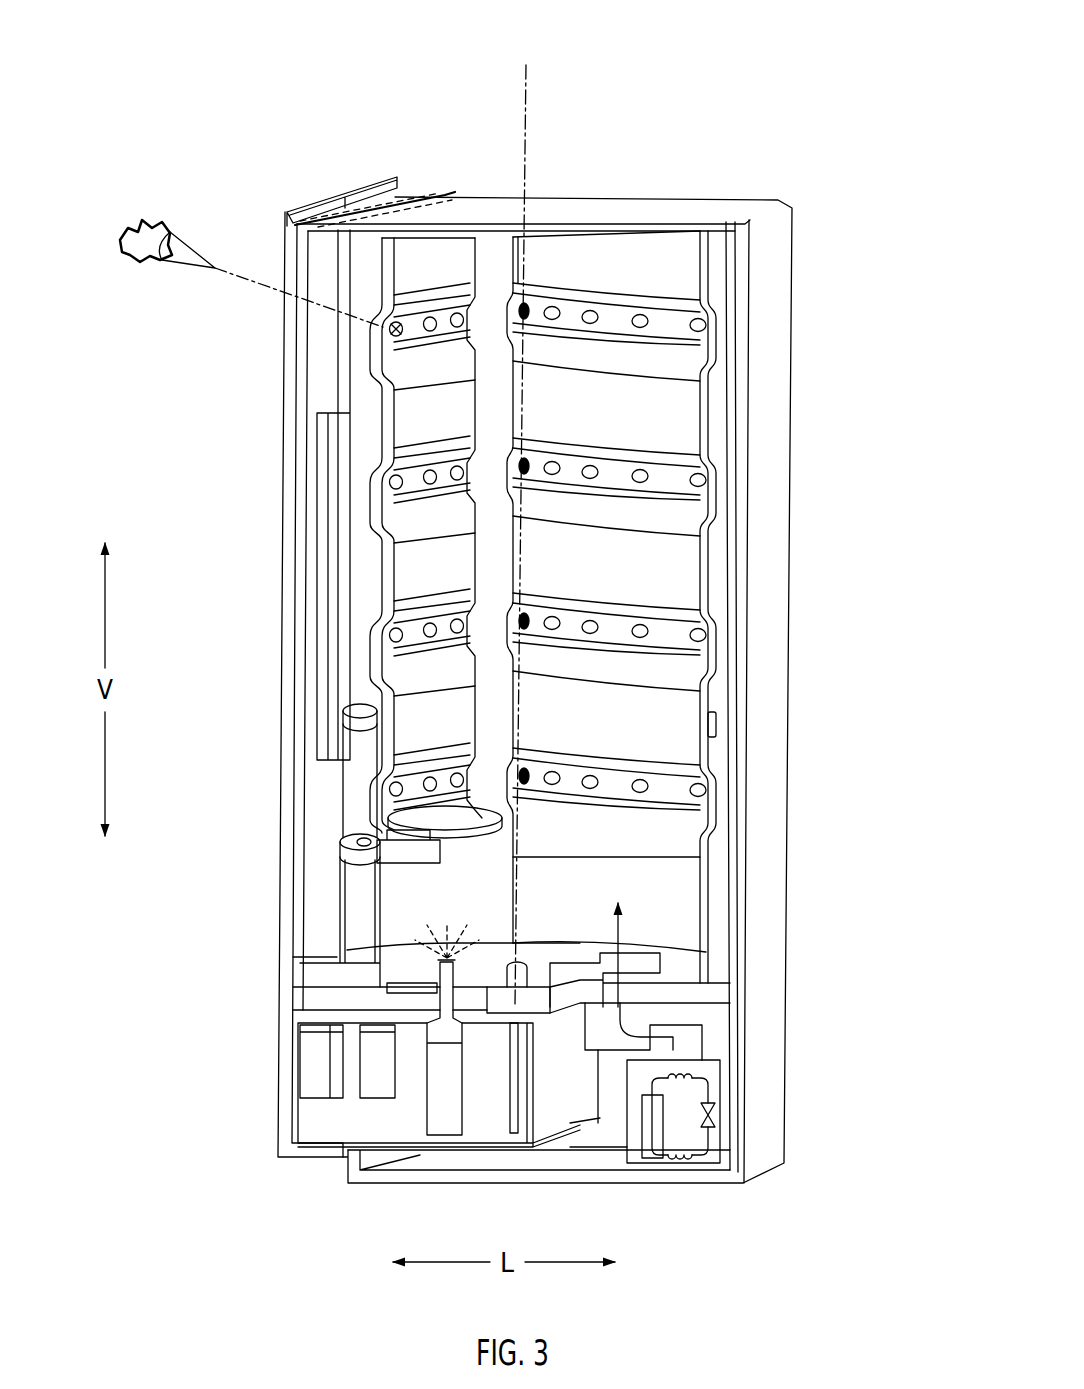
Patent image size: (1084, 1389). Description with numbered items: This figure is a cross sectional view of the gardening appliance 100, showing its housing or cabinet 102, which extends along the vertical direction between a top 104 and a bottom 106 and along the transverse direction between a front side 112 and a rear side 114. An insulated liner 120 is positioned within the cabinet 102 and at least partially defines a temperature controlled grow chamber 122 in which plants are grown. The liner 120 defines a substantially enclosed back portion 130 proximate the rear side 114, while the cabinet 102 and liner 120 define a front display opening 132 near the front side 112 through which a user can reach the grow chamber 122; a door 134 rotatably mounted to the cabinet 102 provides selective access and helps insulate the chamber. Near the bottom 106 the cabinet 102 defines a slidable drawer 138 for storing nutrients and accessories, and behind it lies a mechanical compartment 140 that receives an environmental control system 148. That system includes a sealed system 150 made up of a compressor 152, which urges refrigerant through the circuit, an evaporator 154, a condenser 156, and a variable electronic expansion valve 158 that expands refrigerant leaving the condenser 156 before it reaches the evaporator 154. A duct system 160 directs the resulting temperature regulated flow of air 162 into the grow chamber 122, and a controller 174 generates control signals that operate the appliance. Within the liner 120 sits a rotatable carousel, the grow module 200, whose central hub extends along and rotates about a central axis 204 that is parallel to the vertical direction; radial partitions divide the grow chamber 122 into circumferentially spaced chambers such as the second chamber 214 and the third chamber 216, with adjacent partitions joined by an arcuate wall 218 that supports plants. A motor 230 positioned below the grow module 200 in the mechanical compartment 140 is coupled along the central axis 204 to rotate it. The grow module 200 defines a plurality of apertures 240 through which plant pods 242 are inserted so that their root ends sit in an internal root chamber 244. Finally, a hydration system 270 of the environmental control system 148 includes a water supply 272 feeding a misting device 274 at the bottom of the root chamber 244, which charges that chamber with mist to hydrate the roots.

The gardening appliance 100 is at (845, 93).
The cabinet 102 is at (777, 342).
The top 104 is at (622, 250).
The bottom 106 is at (405, 1190).
The front side 112 is at (400, 177).
The rear side 114 is at (778, 519).
The insulated liner 120 is at (735, 245).
The grow chamber 122 is at (657, 258).
The enclosed back portion 130 is at (733, 648).
The front display opening 132 is at (360, 783).
The door 134 is at (283, 306).
The drawer 138 is at (288, 1090).
The mechanical compartment 140 is at (585, 1153).
The environmental control system 148 is at (722, 1107).
The sealed system 150 is at (712, 1130).
The compressor 152 is at (657, 1157).
The evaporator 154 is at (693, 1157).
The condenser 156 is at (690, 1067).
The variable electronic expansion valve 158 is at (712, 1120).
The duct system 160 is at (703, 1030).
The flow of air 162 is at (622, 927).
The controller 174 is at (447, 208).
The grow module 200 is at (582, 276).
The central axis 204 is at (530, 95).
The second chamber 214 is at (713, 592).
The third chamber 216 is at (360, 592).
The arcuate wall 218 is at (680, 425).
The motor 230 is at (497, 1013).
The aperture 240 is at (703, 780).
The plant pod 242 is at (190, 240).
The root chamber 244 is at (482, 477).
The hydration system 270 is at (437, 1050).
The water supply 272 is at (430, 1034).
The misting device 274 is at (293, 960).